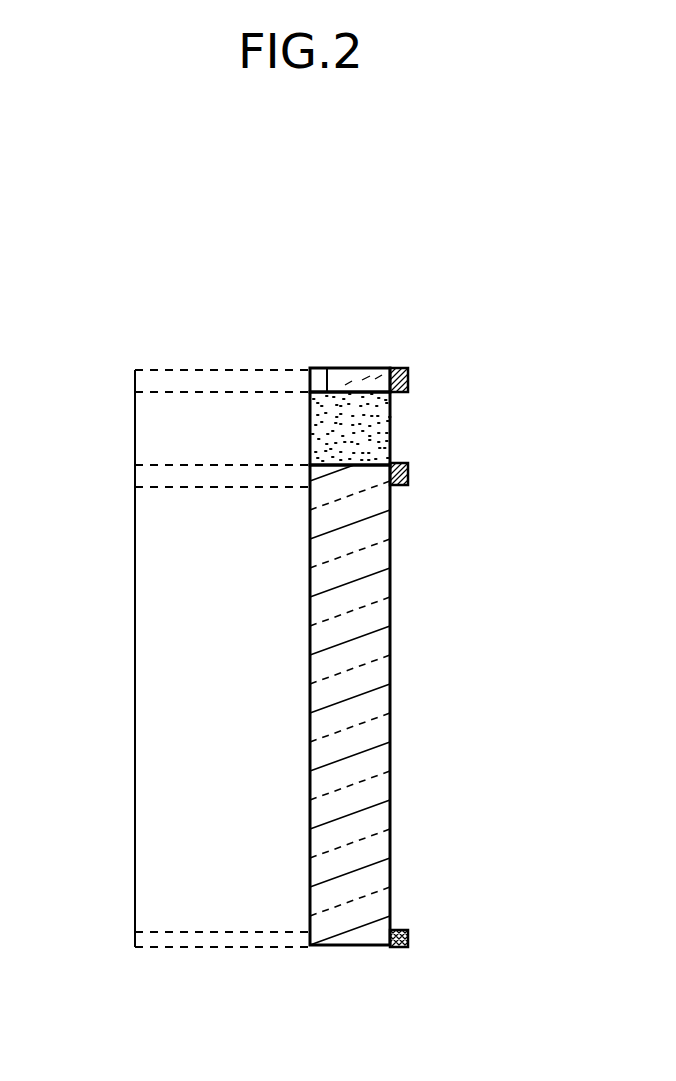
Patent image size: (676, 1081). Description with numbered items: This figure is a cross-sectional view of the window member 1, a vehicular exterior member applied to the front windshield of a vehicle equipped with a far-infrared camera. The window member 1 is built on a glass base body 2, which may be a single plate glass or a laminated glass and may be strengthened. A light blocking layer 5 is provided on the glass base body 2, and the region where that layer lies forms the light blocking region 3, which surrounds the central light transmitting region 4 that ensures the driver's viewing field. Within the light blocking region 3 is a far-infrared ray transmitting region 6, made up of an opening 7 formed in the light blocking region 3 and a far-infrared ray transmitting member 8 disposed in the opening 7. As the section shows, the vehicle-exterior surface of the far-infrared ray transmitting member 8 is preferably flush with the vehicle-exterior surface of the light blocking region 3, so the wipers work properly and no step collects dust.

The window member 1 is at (375, 288).
The glass base body 2 is at (390, 770).
The light blocking region 3 is at (135, 938).
The light transmitting region 4 is at (135, 708).
The light blocking layer 5 is at (410, 378).
The far-infrared ray transmitting region 6 is at (135, 428).
The opening 7 is at (327, 368).
The far-infrared ray transmitting member 8 is at (390, 433).